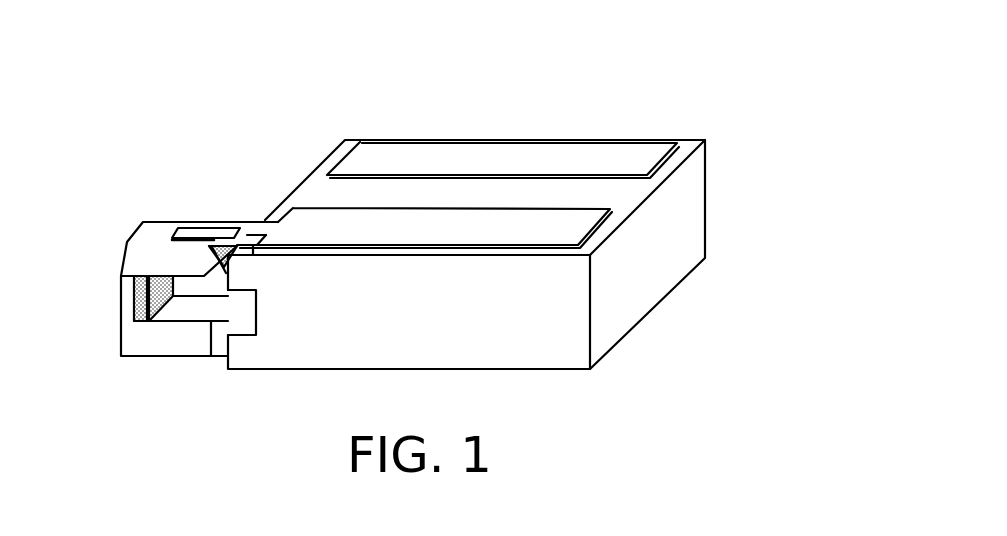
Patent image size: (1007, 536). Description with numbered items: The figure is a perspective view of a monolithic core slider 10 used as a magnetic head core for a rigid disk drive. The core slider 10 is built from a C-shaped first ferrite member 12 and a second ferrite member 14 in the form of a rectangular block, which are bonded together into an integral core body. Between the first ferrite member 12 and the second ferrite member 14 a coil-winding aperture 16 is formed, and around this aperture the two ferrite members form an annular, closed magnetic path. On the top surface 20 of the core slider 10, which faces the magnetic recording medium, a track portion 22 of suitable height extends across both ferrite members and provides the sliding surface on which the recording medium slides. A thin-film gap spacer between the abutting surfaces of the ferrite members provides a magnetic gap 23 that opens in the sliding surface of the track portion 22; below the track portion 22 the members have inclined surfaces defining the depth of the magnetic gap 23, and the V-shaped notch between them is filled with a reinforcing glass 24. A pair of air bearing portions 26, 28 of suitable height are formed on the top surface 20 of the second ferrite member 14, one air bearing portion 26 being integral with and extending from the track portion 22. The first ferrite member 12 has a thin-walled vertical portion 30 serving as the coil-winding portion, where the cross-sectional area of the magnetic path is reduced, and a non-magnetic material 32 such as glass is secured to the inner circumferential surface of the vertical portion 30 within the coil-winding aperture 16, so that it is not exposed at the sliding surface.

The monolithic core slider 10 is at (601, 72).
The first ferrite member 12 is at (142, 390).
The second ferrite member 14 is at (529, 399).
The coil-winding aperture 16 is at (201, 308).
The top surface 20 is at (587, 198).
The track portion 22 is at (196, 222).
The magnetic gap 23 is at (236, 198).
The reinforcing glass 24 is at (224, 272).
The air bearing portion 26 is at (382, 226).
The air bearing portion 28 is at (457, 152).
The vertical portion 30 is at (134, 295).
The non-magnetic material 32 is at (137, 308).